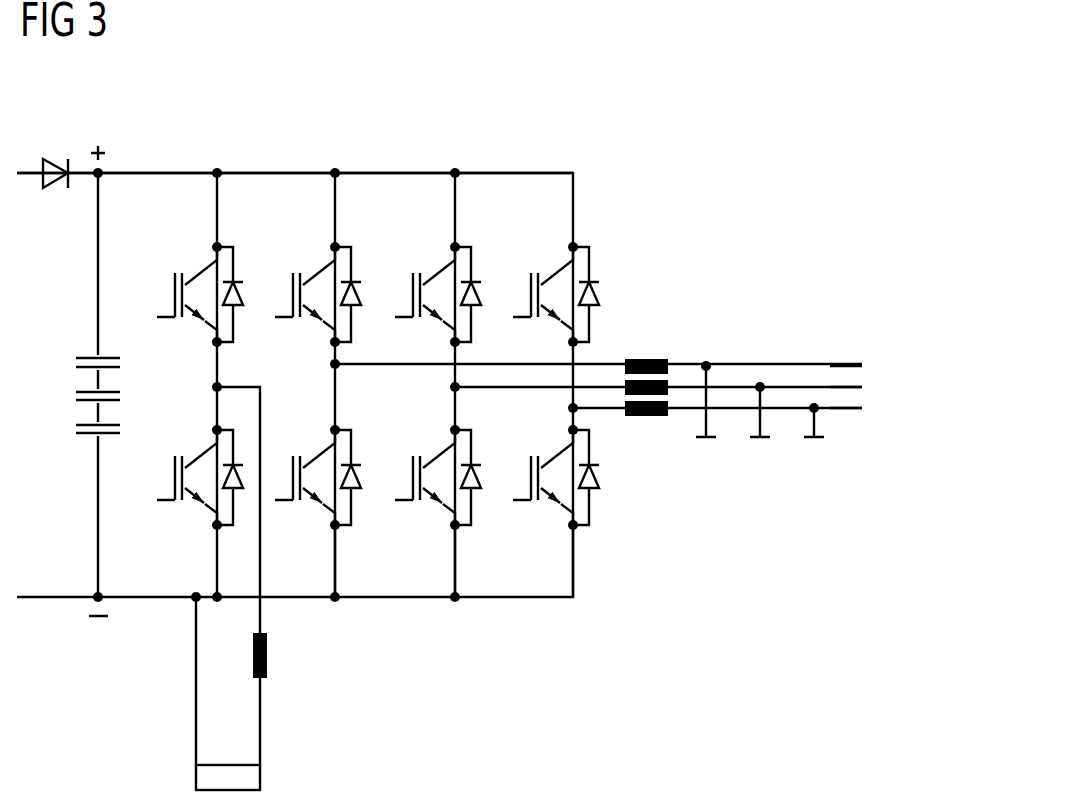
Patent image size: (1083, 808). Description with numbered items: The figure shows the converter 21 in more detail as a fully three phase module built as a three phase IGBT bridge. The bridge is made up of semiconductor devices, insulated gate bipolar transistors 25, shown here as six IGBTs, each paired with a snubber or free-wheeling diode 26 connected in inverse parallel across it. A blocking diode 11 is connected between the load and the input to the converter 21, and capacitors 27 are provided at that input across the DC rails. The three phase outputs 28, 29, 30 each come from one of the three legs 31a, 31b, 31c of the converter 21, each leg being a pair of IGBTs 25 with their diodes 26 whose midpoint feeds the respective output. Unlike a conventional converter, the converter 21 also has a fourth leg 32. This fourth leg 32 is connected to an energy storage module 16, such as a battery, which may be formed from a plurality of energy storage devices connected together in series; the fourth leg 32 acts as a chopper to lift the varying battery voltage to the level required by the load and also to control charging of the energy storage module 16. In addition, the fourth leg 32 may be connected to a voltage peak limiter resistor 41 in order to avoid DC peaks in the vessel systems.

The blocking diode 11 is at (60, 190).
The fourth leg 32 is at (213, 160).
The converter 21 is at (451, 160).
The insulated gate bipolar transistor 25 is at (170, 259).
The free-wheeling diode 26 is at (242, 280).
The capacitor 27 is at (122, 398).
The phase output 28 is at (753, 364).
The phase output 29 is at (830, 385).
The phase output 30 is at (866, 403).
The leg 31a is at (341, 626).
The leg 31b is at (463, 626).
The leg 31c is at (582, 626).
The voltage peak limiter resistor 41 is at (268, 655).
The energy storage module 16 is at (228, 765).